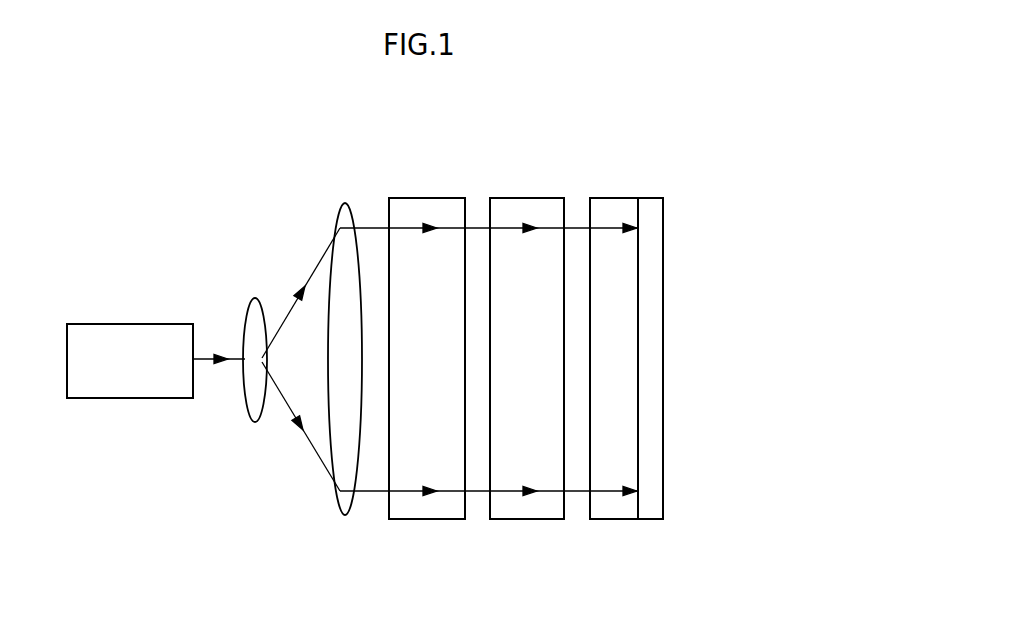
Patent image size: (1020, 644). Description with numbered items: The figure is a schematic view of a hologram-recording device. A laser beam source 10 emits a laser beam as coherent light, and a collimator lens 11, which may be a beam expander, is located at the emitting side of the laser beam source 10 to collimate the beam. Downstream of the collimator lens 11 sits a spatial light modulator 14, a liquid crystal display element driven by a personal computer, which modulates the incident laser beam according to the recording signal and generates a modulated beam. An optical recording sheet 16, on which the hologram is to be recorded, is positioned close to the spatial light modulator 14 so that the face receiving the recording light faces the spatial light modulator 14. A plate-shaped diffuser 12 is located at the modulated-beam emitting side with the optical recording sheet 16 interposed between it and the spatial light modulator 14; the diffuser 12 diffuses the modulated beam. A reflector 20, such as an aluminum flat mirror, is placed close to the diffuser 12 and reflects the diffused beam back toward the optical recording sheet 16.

The laser beam source 10 is at (133, 323).
The collimator lens 11 is at (354, 182).
The diffuser 12 is at (614, 205).
The spatial light modulator 14 is at (426, 205).
The optical recording sheet 16 is at (528, 512).
The reflector 20 is at (655, 300).